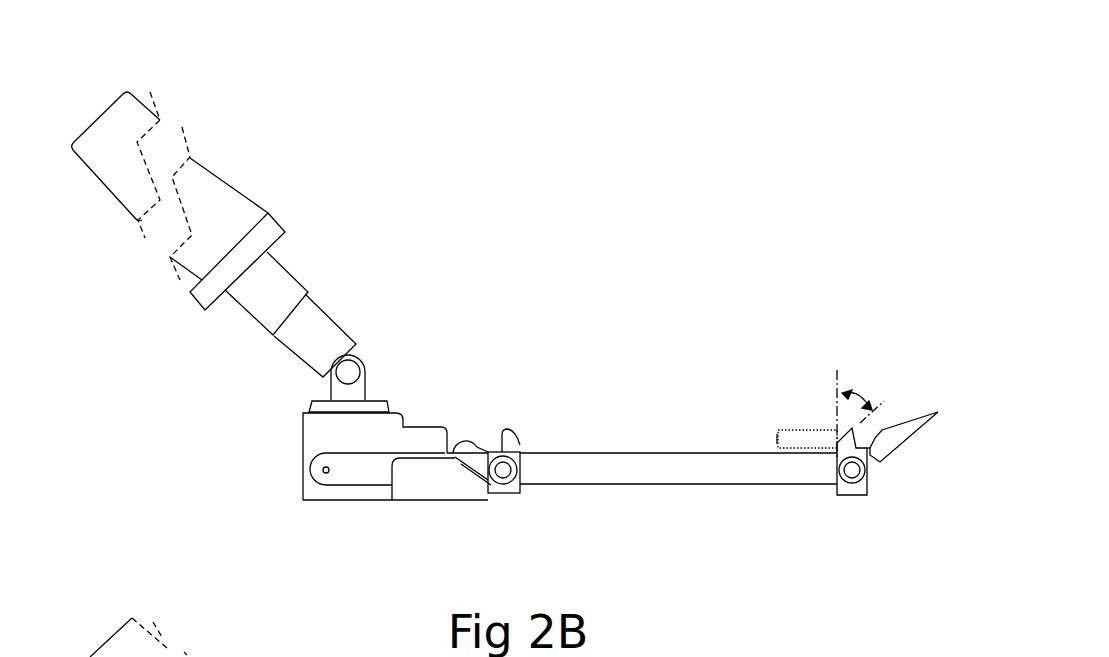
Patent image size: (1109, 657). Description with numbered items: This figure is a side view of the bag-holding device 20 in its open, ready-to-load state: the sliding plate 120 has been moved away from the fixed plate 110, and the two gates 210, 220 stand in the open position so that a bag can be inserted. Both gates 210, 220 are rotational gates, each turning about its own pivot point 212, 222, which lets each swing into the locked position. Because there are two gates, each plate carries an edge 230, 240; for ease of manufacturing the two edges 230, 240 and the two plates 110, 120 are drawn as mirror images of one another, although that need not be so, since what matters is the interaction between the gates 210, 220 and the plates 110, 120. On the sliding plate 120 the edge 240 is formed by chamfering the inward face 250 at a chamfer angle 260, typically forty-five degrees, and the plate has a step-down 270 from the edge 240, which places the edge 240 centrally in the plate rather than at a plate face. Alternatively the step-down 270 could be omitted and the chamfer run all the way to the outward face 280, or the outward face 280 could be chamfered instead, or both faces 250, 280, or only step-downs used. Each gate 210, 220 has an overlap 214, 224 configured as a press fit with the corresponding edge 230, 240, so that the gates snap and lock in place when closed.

The bag-holding device 20 is at (512, 160).
The fixed plate 110 is at (520, 445).
The sliding plate 120 is at (860, 490).
The gate 210 is at (457, 457).
The pivot point 212 is at (495, 477).
The overlap 214 is at (477, 442).
The gate 220 is at (910, 442).
The pivot point 222 is at (848, 495).
The overlap 224 is at (875, 438).
The edge 230 is at (502, 434).
The edge 240 is at (838, 424).
The inward face 250 is at (837, 487).
The chamfer angle 260 is at (853, 428).
The step-down 270 is at (777, 440).
The outward face 280 is at (880, 480).